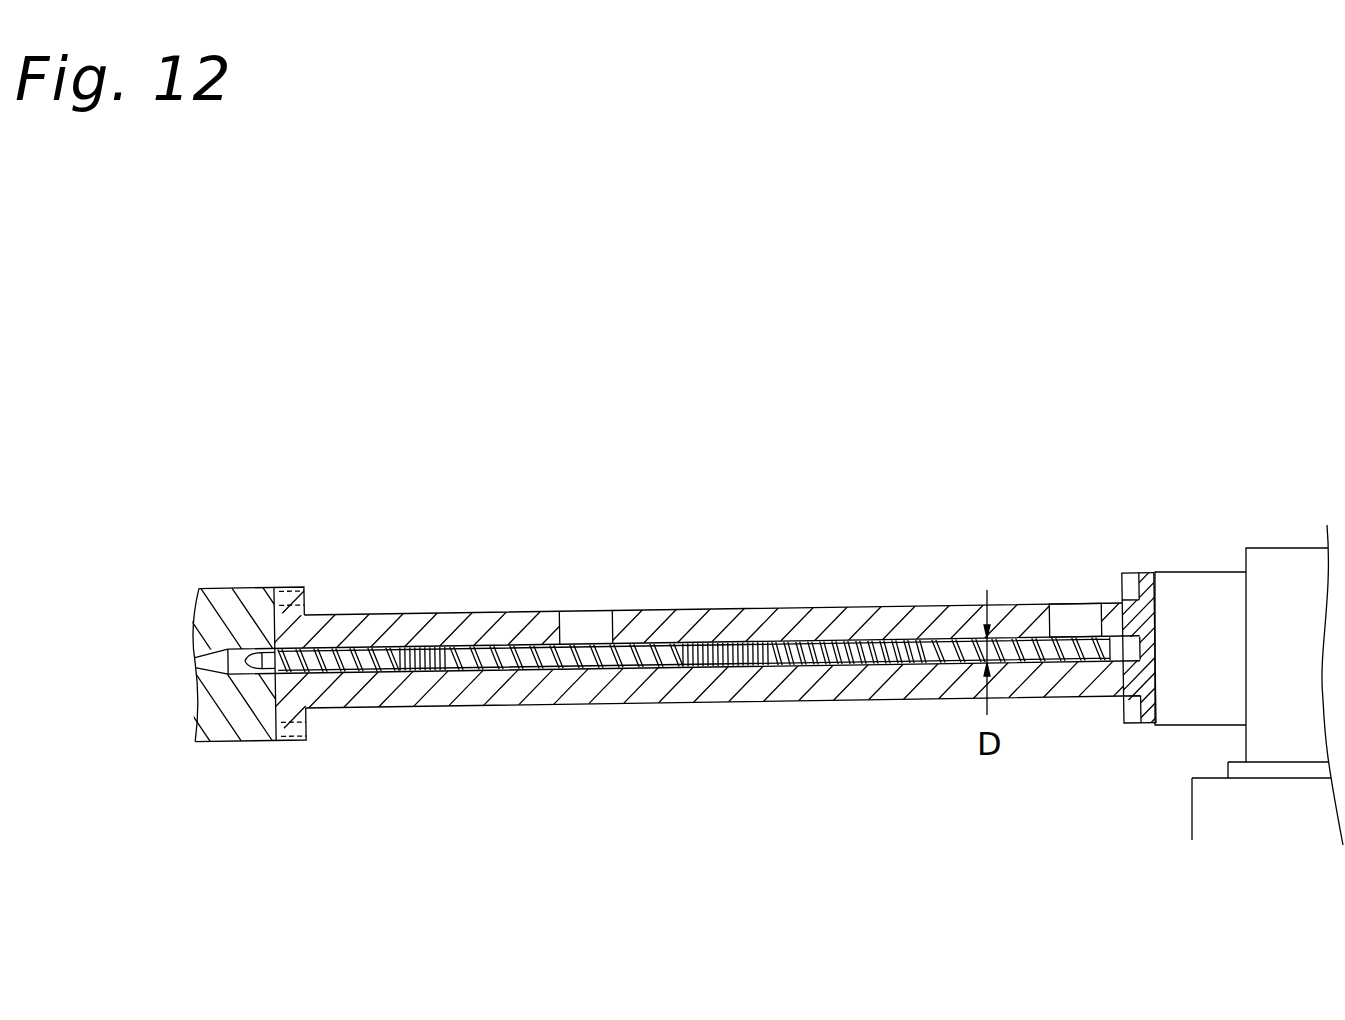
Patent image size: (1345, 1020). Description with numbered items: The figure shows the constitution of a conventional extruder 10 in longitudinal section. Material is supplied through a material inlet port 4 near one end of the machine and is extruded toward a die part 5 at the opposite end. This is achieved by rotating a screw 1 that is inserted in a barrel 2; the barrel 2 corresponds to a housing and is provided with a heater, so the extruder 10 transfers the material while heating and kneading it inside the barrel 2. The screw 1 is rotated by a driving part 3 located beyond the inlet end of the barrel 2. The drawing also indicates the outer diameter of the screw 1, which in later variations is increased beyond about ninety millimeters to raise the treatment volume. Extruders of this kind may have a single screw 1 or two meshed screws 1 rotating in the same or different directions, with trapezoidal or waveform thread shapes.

The screw 1 is at (840, 640).
The barrel 2 is at (437, 620).
The driving part 3 is at (1280, 568).
The material inlet port 4 is at (1077, 608).
The die part 5 is at (243, 590).
The extruder 10 is at (1240, 308).